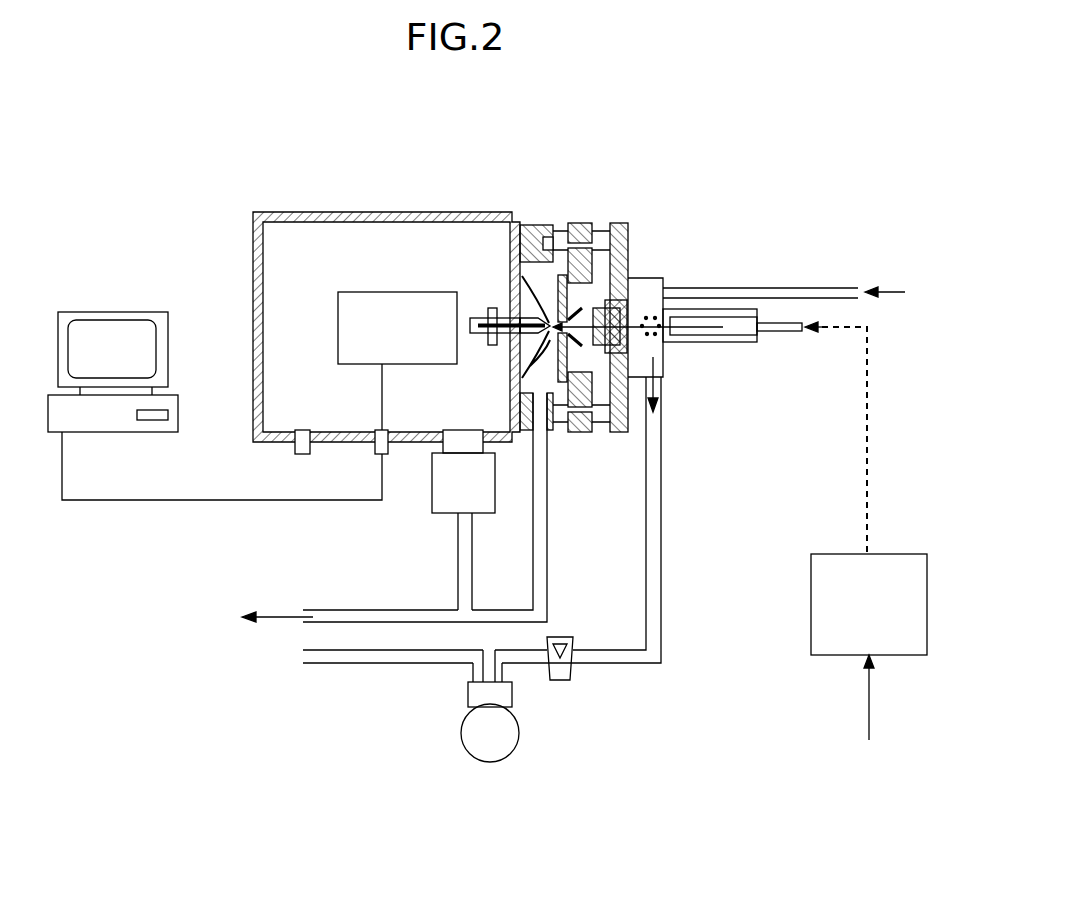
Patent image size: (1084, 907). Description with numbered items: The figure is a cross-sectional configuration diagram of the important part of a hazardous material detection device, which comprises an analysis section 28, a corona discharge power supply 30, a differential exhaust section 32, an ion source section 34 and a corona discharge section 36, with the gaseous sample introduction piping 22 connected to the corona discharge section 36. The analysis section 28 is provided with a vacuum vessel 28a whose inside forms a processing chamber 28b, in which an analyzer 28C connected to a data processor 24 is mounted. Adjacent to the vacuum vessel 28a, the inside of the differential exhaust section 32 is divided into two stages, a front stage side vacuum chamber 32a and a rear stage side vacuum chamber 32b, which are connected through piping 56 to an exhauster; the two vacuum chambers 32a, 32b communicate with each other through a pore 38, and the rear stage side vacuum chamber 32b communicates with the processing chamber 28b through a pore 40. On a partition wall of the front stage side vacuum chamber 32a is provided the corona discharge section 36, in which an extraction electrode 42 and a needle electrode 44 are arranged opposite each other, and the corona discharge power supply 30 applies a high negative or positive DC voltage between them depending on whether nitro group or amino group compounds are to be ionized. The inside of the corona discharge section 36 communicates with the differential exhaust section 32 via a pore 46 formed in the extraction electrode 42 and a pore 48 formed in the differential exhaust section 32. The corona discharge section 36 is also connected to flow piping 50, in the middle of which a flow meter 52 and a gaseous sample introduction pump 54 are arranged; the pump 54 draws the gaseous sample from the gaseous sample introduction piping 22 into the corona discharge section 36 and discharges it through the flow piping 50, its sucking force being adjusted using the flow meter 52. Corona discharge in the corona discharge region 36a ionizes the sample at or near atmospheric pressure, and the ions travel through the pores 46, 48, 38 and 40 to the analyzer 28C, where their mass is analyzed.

The gaseous sample introduction piping 22 is at (846, 285).
The data processor 24 is at (112, 434).
The analysis section 28 is at (346, 284).
The vacuum vessel 28a is at (253, 258).
The processing chamber 28b is at (306, 265).
The analyzer 28C is at (412, 292).
The corona discharge power supply 30 is at (811, 603).
The differential exhaust section 32 is at (617, 327).
The front stage side vacuum chamber 32a is at (590, 352).
The rear stage side vacuum chamber 32b is at (553, 388).
The ion source section 34 is at (765, 431).
The corona discharge section 36 is at (672, 280).
The corona discharge region 36a is at (664, 375).
The pore 38 is at (550, 315).
The pore 40 is at (522, 372).
The extraction electrode 42 is at (632, 380).
The needle electrode 44 is at (708, 333).
The pore 46 is at (628, 322).
The pore 48 is at (588, 318).
The flow piping 50 is at (662, 523).
The flow meter 52 is at (572, 672).
The gaseous sample introduction pump 54 is at (462, 733).
The piping 56 is at (547, 576).